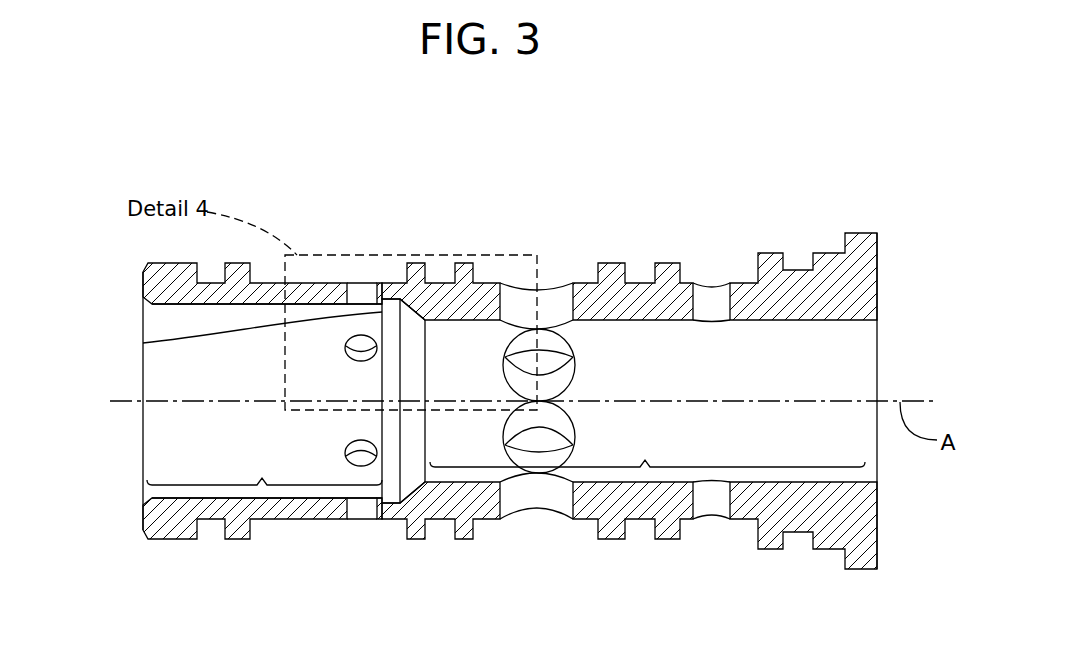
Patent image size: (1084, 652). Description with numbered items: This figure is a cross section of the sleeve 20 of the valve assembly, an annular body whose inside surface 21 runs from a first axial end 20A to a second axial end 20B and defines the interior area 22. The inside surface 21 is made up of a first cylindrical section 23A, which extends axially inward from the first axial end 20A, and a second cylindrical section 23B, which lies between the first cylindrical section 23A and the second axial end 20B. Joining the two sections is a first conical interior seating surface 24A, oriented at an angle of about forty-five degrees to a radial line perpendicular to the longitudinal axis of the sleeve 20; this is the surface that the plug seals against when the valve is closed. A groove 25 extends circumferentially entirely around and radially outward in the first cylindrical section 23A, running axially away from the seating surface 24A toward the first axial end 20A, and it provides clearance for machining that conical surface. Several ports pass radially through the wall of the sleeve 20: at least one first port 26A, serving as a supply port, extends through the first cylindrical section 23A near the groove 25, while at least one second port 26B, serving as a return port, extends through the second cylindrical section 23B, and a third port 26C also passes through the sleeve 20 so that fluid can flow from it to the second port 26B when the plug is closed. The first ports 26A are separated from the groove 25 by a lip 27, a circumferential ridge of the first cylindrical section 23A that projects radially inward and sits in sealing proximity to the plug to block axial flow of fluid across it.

The sleeve 20 is at (658, 210).
The first axial end 20A is at (143, 280).
The second axial end 20B is at (878, 270).
The inside surface 21 is at (401, 311).
The interior area 22 is at (182, 467).
The first cylindrical section 23A is at (264, 468).
The second cylindrical section 23B is at (647, 451).
The first conical interior seating surface 24A is at (143, 343).
The groove 25 is at (398, 503).
The first port 26A is at (347, 350).
The second port 26B is at (712, 292).
The third port 26C is at (563, 297).
The lip 27 is at (390, 295).